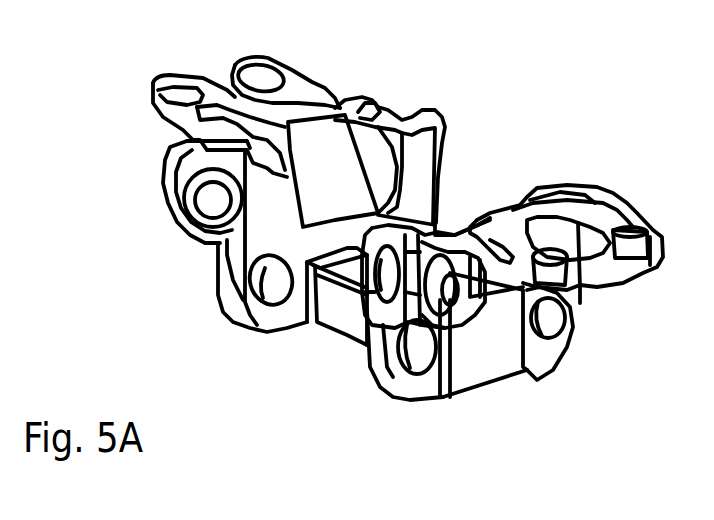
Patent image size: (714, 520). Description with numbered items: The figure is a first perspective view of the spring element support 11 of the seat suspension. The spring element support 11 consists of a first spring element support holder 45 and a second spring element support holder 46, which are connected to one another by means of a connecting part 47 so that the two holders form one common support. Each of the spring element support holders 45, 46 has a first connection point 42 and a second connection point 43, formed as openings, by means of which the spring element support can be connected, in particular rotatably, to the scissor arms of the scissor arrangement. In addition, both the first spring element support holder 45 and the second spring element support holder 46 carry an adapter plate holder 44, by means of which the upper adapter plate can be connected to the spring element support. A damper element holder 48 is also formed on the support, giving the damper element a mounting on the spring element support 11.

The spring element support 11 is at (585, 60).
The first connection point 42 is at (260, 312).
The second connection point 43 is at (567, 343).
The adapter plate holder 44 is at (315, 80).
The first spring element support holder 45 is at (477, 433).
The second spring element support holder 46 is at (117, 103).
The connecting part 47 is at (340, 332).
The damper element holder 48 is at (165, 160).